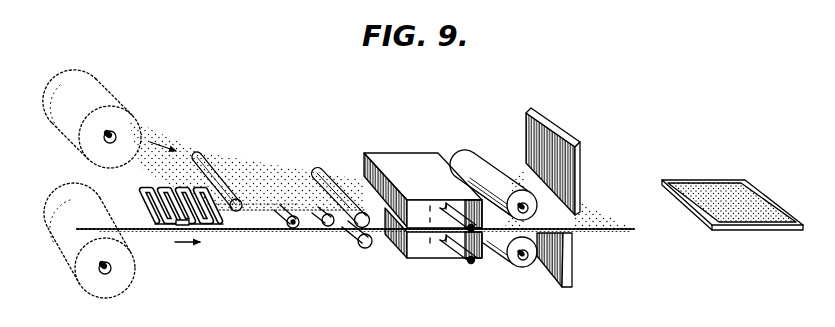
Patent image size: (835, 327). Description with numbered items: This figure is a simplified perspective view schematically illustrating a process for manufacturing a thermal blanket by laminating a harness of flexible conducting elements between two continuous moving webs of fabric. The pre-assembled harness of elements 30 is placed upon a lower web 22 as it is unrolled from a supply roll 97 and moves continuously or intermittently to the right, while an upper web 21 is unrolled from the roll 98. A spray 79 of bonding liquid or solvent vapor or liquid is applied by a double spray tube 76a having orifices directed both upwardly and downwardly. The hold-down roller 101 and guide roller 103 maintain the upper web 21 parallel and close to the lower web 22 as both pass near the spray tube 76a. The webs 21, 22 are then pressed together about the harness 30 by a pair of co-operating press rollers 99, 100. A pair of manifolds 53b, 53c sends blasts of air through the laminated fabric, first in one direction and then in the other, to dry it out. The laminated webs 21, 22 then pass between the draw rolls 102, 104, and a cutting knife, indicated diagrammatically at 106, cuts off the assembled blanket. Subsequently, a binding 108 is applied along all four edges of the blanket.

The upper web 21 is at (257, 168).
The lower web 22 is at (238, 234).
The harness of elements 30 is at (162, 224).
The manifold 53b is at (408, 151).
The manifold 53c is at (420, 260).
The double spray tube 76a is at (305, 224).
The spray 79 is at (283, 219).
The supply roll 97 is at (108, 296).
The roll 98 is at (127, 118).
The press roller 99 is at (325, 170).
The press roller 100 is at (368, 249).
The hold-down roller 101 is at (200, 152).
The draw roll 102 is at (480, 148).
The guide roller 103 is at (331, 227).
The draw roll 104 is at (506, 262).
The cutting knife 106 is at (566, 132).
The binding 108 is at (688, 178).